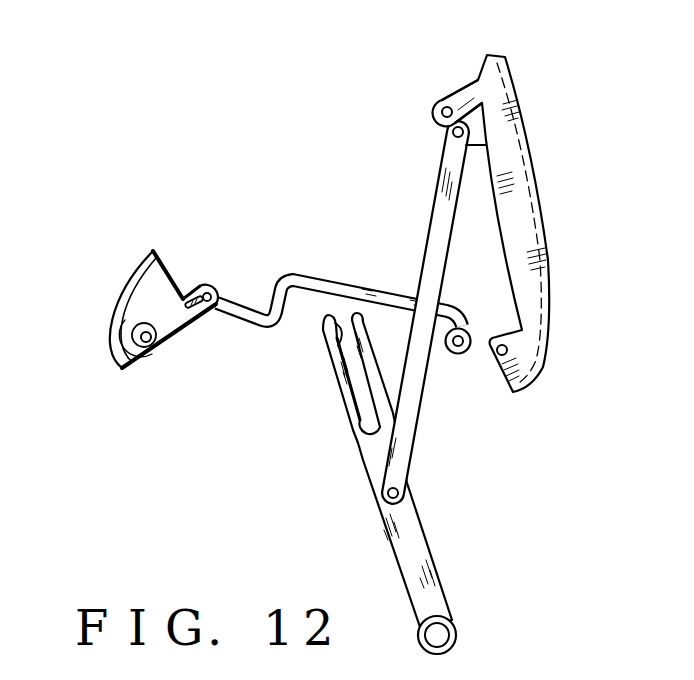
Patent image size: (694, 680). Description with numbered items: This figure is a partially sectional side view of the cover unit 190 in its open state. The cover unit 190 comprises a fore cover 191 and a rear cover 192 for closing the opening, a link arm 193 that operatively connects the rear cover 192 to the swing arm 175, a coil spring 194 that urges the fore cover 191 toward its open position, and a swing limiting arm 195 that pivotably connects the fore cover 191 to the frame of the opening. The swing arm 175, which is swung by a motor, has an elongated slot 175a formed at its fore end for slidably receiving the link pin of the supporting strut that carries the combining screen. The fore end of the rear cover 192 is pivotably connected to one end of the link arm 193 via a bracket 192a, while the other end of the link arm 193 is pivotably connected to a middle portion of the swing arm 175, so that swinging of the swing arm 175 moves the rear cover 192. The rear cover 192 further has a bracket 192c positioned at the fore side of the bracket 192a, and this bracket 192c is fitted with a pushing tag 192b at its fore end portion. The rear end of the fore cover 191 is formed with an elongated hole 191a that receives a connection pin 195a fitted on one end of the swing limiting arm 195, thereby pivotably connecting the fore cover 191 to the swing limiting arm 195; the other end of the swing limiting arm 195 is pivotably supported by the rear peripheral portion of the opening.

The swing arm 175 is at (413, 535).
The elongated slot 175a is at (333, 340).
The cover unit 190 is at (541, 406).
The fore cover 191 is at (125, 290).
The elongated hole 191a is at (198, 310).
The rear cover 192 is at (552, 235).
The bracket 192a is at (475, 147).
The pushing tag 192b is at (438, 110).
The bracket 192c is at (458, 98).
The link arm 193 is at (437, 203).
The coil spring 194 is at (160, 353).
The swing limiting arm 195 is at (332, 277).
The connection pin 195a is at (203, 288).